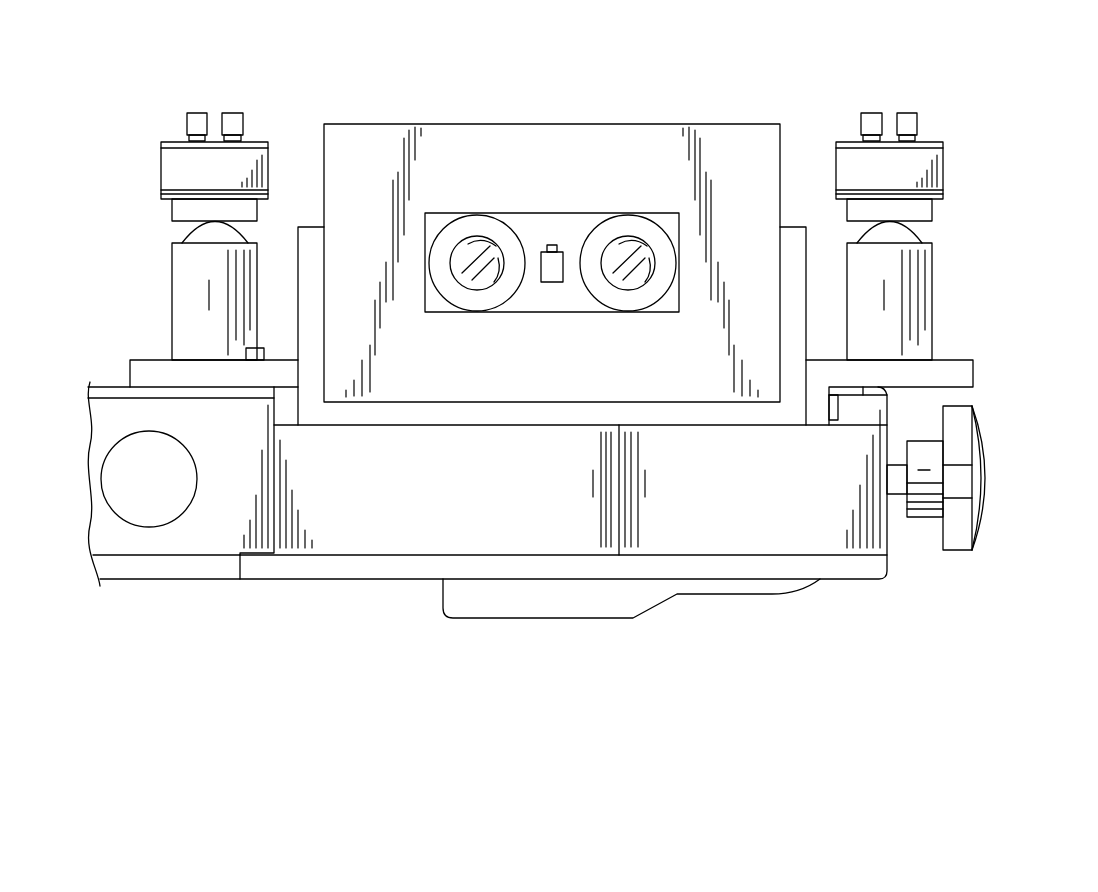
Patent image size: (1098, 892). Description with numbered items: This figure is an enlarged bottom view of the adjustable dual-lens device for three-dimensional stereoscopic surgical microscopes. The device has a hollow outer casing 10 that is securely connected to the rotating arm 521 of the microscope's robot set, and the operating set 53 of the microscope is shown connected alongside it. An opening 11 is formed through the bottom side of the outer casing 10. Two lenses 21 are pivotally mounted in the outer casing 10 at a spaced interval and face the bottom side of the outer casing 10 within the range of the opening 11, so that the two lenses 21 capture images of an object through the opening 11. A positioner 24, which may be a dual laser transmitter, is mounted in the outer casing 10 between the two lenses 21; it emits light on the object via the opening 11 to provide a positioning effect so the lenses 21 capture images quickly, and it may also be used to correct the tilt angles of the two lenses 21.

The outer casing 10 is at (662, 100).
The opening 11 is at (537, 225).
The lenses 21 is at (462, 263).
The positioner 24 is at (550, 273).
The operating set 53 is at (962, 283).
The rotating arm 521 is at (223, 532).